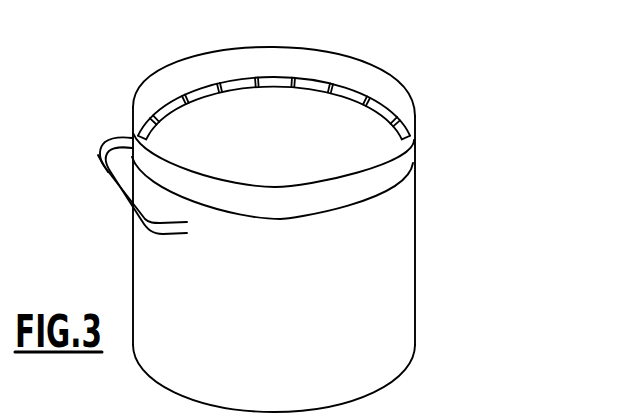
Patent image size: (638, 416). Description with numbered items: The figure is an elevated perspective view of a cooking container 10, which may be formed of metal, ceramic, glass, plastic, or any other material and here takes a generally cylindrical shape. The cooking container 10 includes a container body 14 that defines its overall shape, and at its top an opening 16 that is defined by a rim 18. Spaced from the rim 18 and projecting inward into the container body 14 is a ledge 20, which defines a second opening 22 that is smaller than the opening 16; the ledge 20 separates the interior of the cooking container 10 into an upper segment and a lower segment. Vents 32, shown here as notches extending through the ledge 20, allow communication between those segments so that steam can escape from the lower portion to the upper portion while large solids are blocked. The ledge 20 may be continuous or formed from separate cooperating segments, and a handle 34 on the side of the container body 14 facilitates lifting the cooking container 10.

The cooking container 10 is at (137, 89).
The container body 14 is at (416, 191).
The opening 16 is at (332, 50).
The rim 18 is at (404, 118).
The ledge 20 is at (133, 108).
The second opening 22 is at (415, 117).
The vents 32 is at (256, 87).
The handles 34 is at (99, 151).